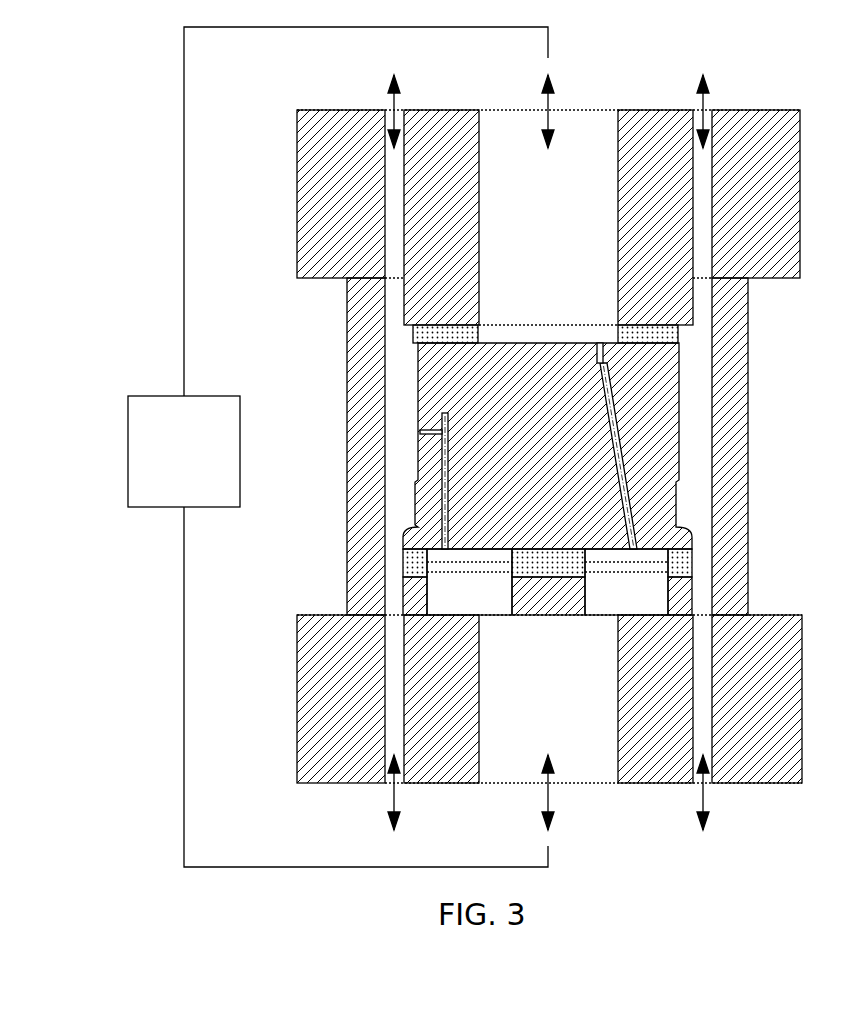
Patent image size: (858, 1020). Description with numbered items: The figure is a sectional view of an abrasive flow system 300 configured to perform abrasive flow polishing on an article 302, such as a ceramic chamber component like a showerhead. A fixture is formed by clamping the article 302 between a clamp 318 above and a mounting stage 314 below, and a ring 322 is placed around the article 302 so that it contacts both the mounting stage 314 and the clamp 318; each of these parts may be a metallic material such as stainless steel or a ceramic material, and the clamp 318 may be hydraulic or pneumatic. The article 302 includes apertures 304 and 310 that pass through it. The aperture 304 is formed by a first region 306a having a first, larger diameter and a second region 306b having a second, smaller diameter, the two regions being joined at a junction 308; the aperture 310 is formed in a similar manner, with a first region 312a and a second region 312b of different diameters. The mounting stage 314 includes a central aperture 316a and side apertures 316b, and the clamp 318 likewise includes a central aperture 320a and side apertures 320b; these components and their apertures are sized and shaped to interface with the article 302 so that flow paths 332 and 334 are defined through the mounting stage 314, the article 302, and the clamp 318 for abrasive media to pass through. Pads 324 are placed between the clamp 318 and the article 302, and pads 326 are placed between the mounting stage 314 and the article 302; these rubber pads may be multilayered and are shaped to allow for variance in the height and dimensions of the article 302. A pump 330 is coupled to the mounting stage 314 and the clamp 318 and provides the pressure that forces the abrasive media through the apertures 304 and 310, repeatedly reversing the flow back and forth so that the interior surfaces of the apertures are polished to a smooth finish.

The abrasive flow system 300 is at (128, 118).
The article 302 is at (547, 446).
The aperture 304 is at (440, 480).
The first region 306a is at (443, 517).
The second region 306b is at (435, 431).
The junction 308 is at (436, 419).
The aperture 310 is at (623, 442).
The first region 312a is at (615, 418).
The second region 312b is at (598, 343).
The mounting stage 314 is at (294, 653).
The central aperture 316a is at (548, 701).
The side apertures 316b is at (395, 718).
The clamp 318 is at (294, 138).
The central aperture 320a is at (548, 266).
The side apertures 320b is at (397, 215).
The ring 322 is at (368, 565).
The pads 324 is at (417, 337).
The pads 326 is at (415, 565).
The pump 330 is at (338, 447).
The flow path 332 is at (393, 792).
The flow path 334 is at (393, 103).